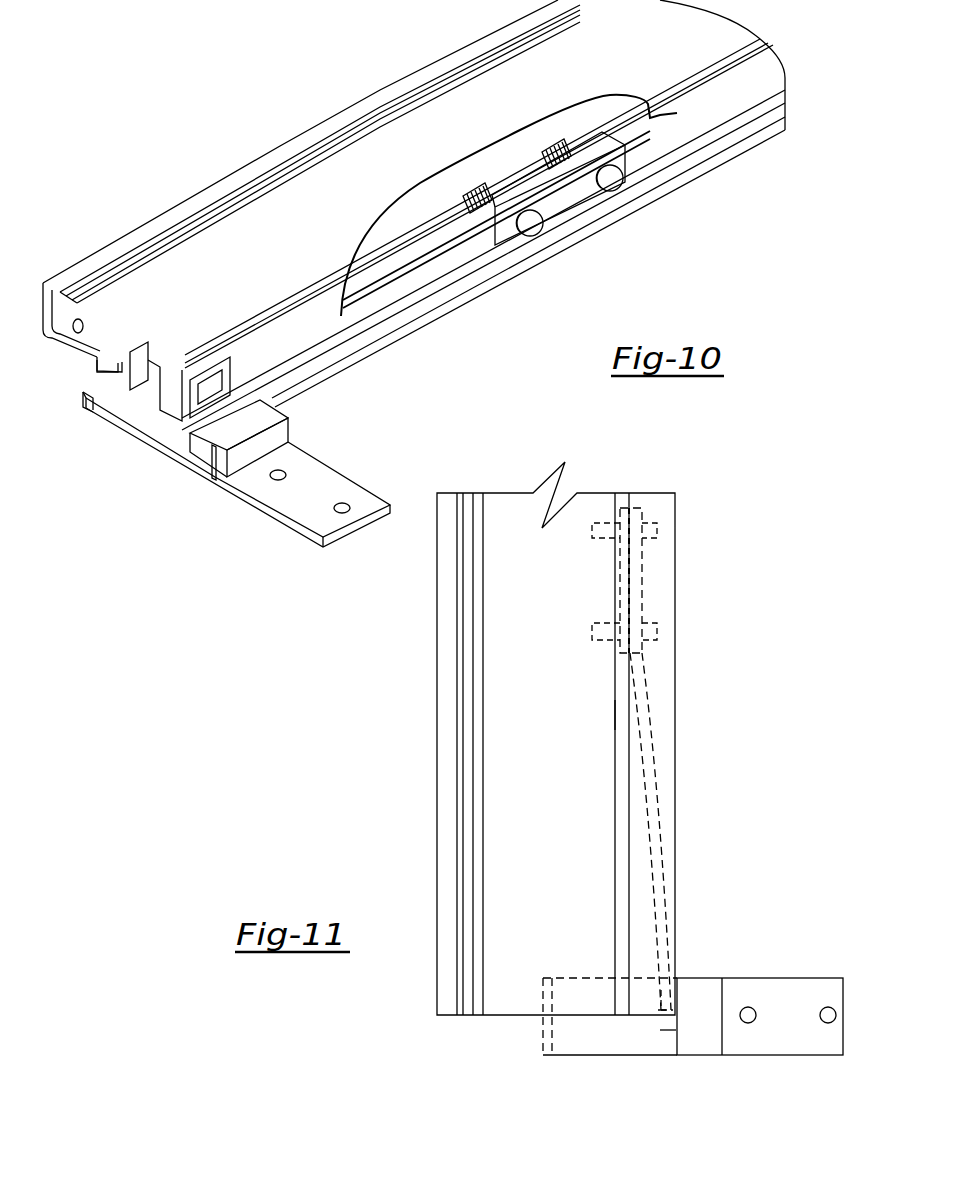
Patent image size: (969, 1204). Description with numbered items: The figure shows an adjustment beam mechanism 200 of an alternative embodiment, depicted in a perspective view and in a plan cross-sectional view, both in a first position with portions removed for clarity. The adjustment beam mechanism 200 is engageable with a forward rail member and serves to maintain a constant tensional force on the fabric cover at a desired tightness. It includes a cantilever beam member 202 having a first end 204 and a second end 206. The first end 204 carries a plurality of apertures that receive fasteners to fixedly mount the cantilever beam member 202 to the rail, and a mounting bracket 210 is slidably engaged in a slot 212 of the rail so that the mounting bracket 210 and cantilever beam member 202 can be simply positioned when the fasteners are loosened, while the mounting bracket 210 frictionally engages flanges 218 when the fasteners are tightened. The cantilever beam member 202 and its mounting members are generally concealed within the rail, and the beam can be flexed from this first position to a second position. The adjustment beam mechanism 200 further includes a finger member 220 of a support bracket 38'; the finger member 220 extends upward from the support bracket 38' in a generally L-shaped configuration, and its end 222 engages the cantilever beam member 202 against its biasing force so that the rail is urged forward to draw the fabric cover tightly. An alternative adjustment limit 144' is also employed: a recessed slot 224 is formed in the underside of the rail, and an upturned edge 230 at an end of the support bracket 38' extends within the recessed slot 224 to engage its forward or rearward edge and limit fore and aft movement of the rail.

In FIG. 10, the adjustment beam mechanism 200 is at (575, 283).
In FIG. 11, the adjustment beam mechanism 200 is at (748, 853).
In FIG. 10, the cantilever beam member 202 is at (415, 300).
In FIG. 11, the cantilever beam member 202 is at (663, 770).
In FIG. 10, the first end 204 is at (573, 213).
In FIG. 11, the first end 204 is at (647, 565).
In FIG. 10, the second end 206 is at (302, 383).
In FIG. 11, the second end 206 is at (673, 933).
In FIG. 10, the mounting bracket 210 is at (517, 173).
In FIG. 11, the mounting bracket 210 is at (620, 563).
In FIG. 10, the slot 212 is at (163, 395).
In FIG. 11, the slot 212 is at (615, 712).
In FIG. 11, the flanges 218 is at (677, 883).
In FIG. 10, the finger member 220 is at (212, 447).
In FIG. 11, the finger member 220 is at (697, 1037).
In FIG. 11, the end 222 is at (677, 1037).
In FIG. 10, the recessed slot 224 is at (100, 360).
In FIG. 10, the upturned edge 230 is at (83, 407).
In FIG. 10, the adjustment limit 144' is at (67, 402).
In FIG. 10, the support bracket 38' is at (255, 469).
In FIG. 11, the support bracket 38' is at (765, 989).